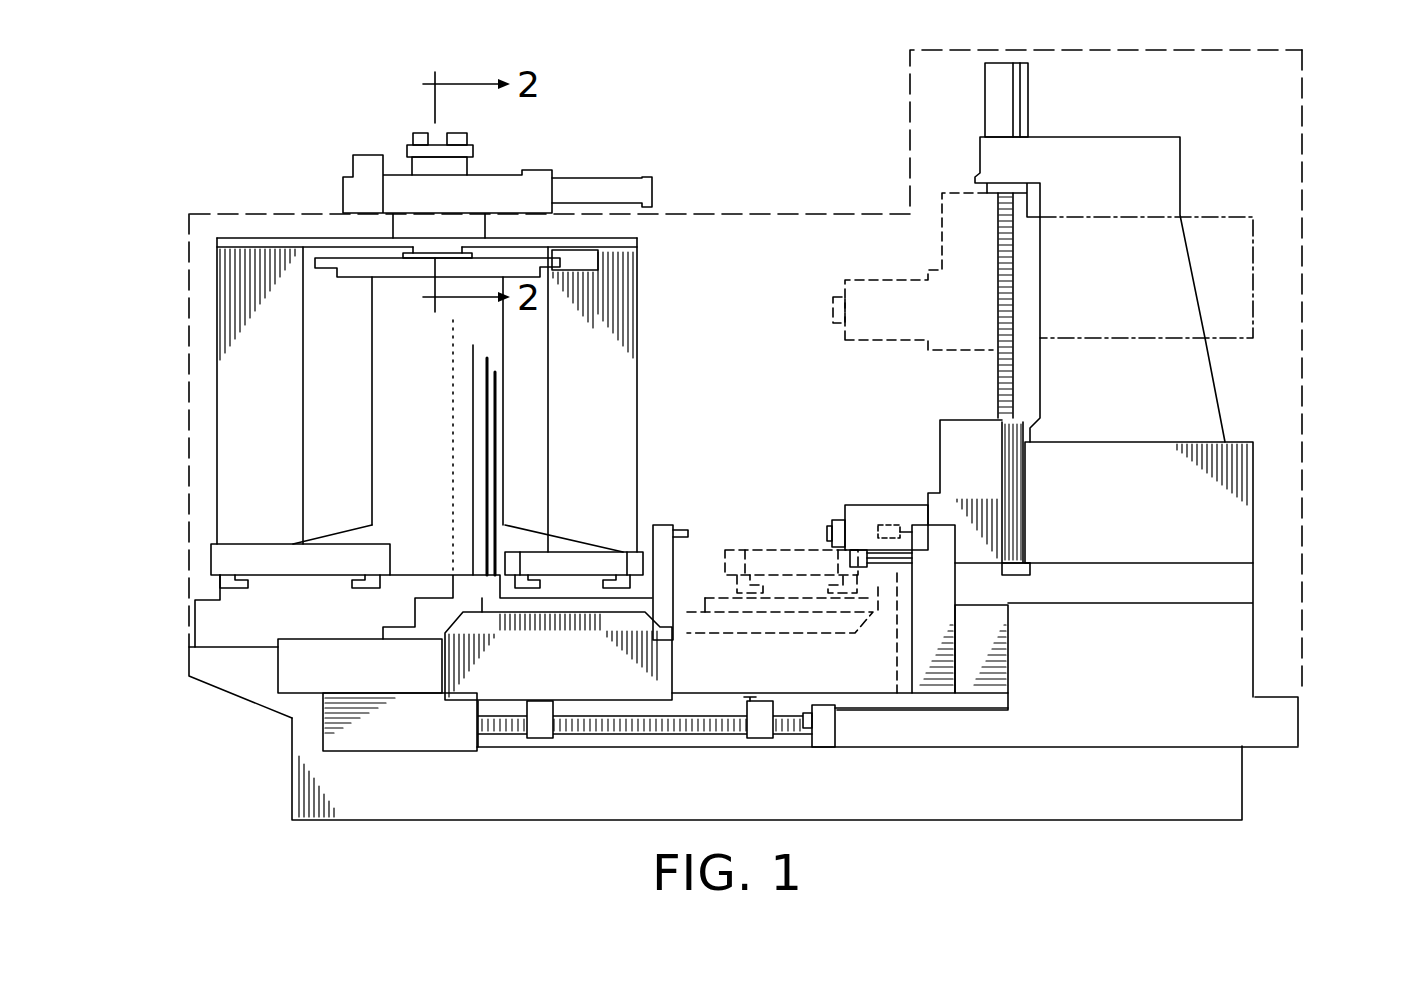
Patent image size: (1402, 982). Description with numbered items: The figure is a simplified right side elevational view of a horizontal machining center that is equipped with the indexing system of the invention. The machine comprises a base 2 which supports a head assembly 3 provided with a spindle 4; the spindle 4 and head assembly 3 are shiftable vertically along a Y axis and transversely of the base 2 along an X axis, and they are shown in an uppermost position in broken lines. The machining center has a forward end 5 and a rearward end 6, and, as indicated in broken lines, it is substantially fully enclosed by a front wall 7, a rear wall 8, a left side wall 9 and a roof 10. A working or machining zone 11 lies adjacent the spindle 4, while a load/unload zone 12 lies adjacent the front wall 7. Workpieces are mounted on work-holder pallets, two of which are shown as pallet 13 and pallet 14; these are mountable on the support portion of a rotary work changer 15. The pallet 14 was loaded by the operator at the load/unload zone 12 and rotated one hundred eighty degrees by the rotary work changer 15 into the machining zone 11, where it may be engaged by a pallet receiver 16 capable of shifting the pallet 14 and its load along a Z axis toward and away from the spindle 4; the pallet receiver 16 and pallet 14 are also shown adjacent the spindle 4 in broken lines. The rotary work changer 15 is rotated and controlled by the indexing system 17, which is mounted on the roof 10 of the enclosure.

The base 2 is at (1104, 794).
The head assembly 3 is at (1113, 340).
The spindle 4 is at (858, 280).
The forward end 5 is at (188, 662).
The rearward end 6 is at (1302, 722).
The front wall 7 is at (188, 442).
The rear wall 8 is at (1292, 369).
The left side wall 9 is at (718, 314).
The roof 10 is at (717, 207).
The working or machining zone 11 is at (747, 403).
The load/unload zone 12 is at (242, 492).
The pallet 13 is at (308, 560).
The pallet 14 is at (587, 560).
The rotary work changer 15 is at (430, 386).
The pallet receiver 16 is at (571, 679).
The indexing system 17 is at (493, 160).